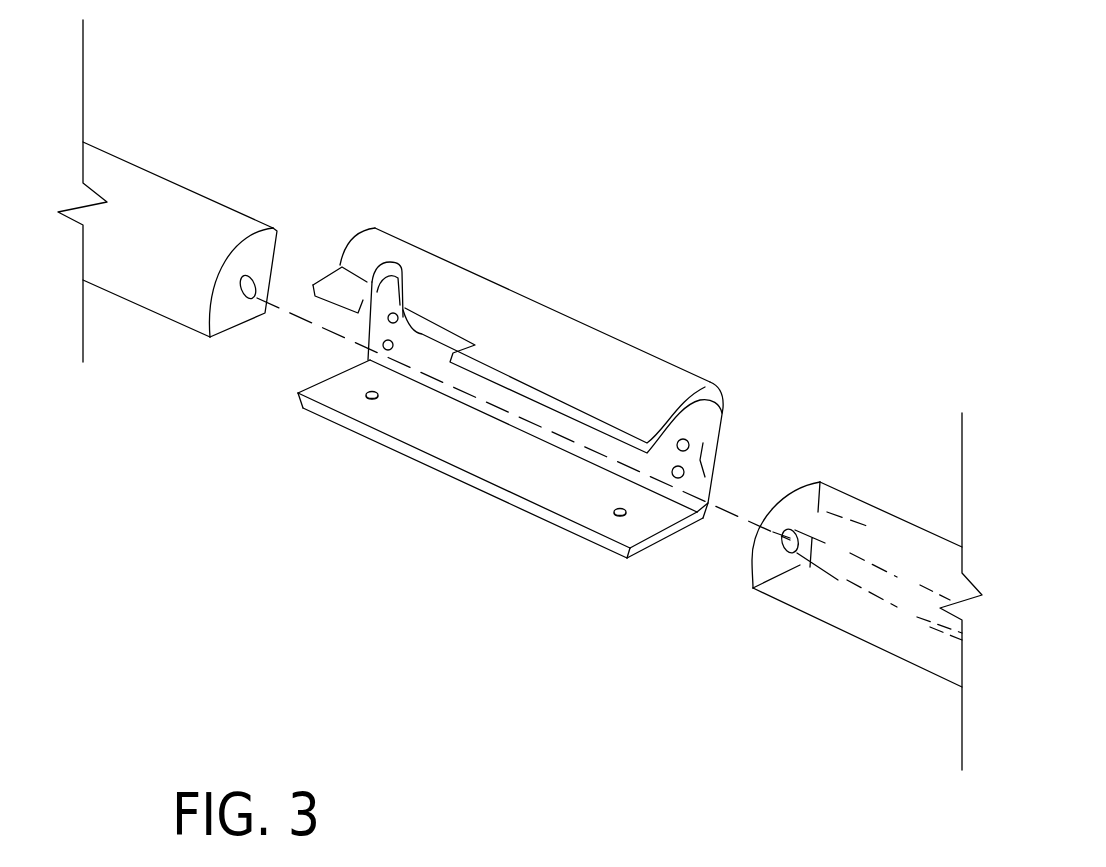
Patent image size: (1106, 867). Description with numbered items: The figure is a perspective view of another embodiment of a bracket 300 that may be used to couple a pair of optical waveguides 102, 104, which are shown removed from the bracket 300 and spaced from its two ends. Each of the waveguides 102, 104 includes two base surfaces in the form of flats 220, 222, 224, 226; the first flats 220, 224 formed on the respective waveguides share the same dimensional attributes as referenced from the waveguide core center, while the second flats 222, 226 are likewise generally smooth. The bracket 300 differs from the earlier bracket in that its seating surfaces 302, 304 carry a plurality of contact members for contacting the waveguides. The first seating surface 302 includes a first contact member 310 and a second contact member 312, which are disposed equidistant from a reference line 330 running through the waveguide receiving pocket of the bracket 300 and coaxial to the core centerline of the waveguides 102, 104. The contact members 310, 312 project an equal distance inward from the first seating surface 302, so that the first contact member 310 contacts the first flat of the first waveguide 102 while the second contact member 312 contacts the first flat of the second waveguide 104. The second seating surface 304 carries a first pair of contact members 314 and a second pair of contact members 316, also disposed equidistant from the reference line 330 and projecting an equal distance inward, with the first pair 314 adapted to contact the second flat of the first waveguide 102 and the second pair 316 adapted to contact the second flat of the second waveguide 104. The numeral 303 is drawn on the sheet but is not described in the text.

The optical waveguide 102 is at (177, 210).
The optical waveguide 104 is at (893, 628).
The flat 220 is at (240, 327).
The flat 222 is at (806, 588).
The flat 224 is at (278, 232).
The flat 226 is at (827, 512).
The bracket 300 is at (638, 240).
The first seating surface 302 is at (342, 385).
The channel support wall 303 is at (715, 418).
The second seating surface 304 is at (690, 490).
The first contact member 310 is at (378, 402).
The second contact member 312 is at (617, 518).
The first pair of contact members 314 is at (700, 482).
The second pair of contact members 316 is at (393, 265).
The reference line 330 is at (705, 535).